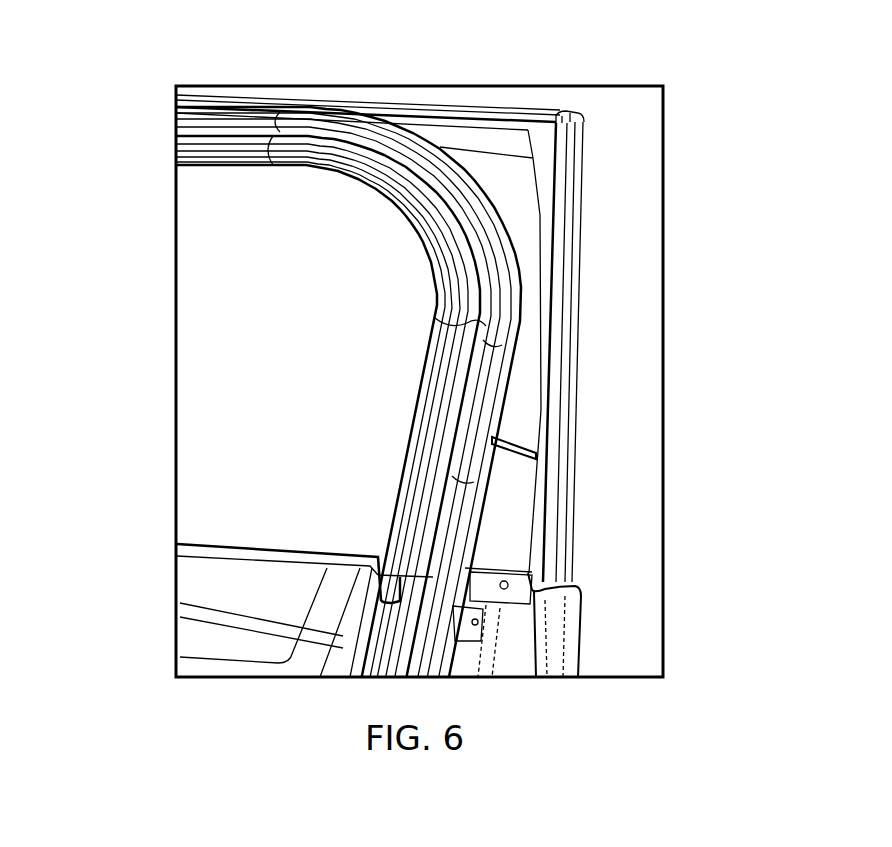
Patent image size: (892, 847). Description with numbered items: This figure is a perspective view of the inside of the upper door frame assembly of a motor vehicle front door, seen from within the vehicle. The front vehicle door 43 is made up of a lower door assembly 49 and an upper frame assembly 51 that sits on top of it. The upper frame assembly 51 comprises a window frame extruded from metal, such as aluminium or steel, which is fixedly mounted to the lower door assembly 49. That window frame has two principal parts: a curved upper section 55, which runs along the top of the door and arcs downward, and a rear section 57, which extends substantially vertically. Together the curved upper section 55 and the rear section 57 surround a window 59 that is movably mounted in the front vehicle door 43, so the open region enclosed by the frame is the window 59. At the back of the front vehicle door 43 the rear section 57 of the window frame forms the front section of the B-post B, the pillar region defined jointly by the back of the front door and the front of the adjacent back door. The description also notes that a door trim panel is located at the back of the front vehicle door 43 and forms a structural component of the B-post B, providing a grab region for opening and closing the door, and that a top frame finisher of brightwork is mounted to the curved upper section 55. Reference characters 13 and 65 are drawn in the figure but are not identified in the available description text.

The B-post B is at (563, 95).
The weatherstrip 13 is at (478, 402).
The front vehicle door 43 is at (705, 488).
The lower door assembly 49 is at (193, 642).
The upper frame assembly 51 is at (158, 425).
The curved upper section 55 is at (228, 158).
The rear section 57 is at (430, 488).
The window 59 is at (281, 356).
The inner panel 65 is at (510, 185).